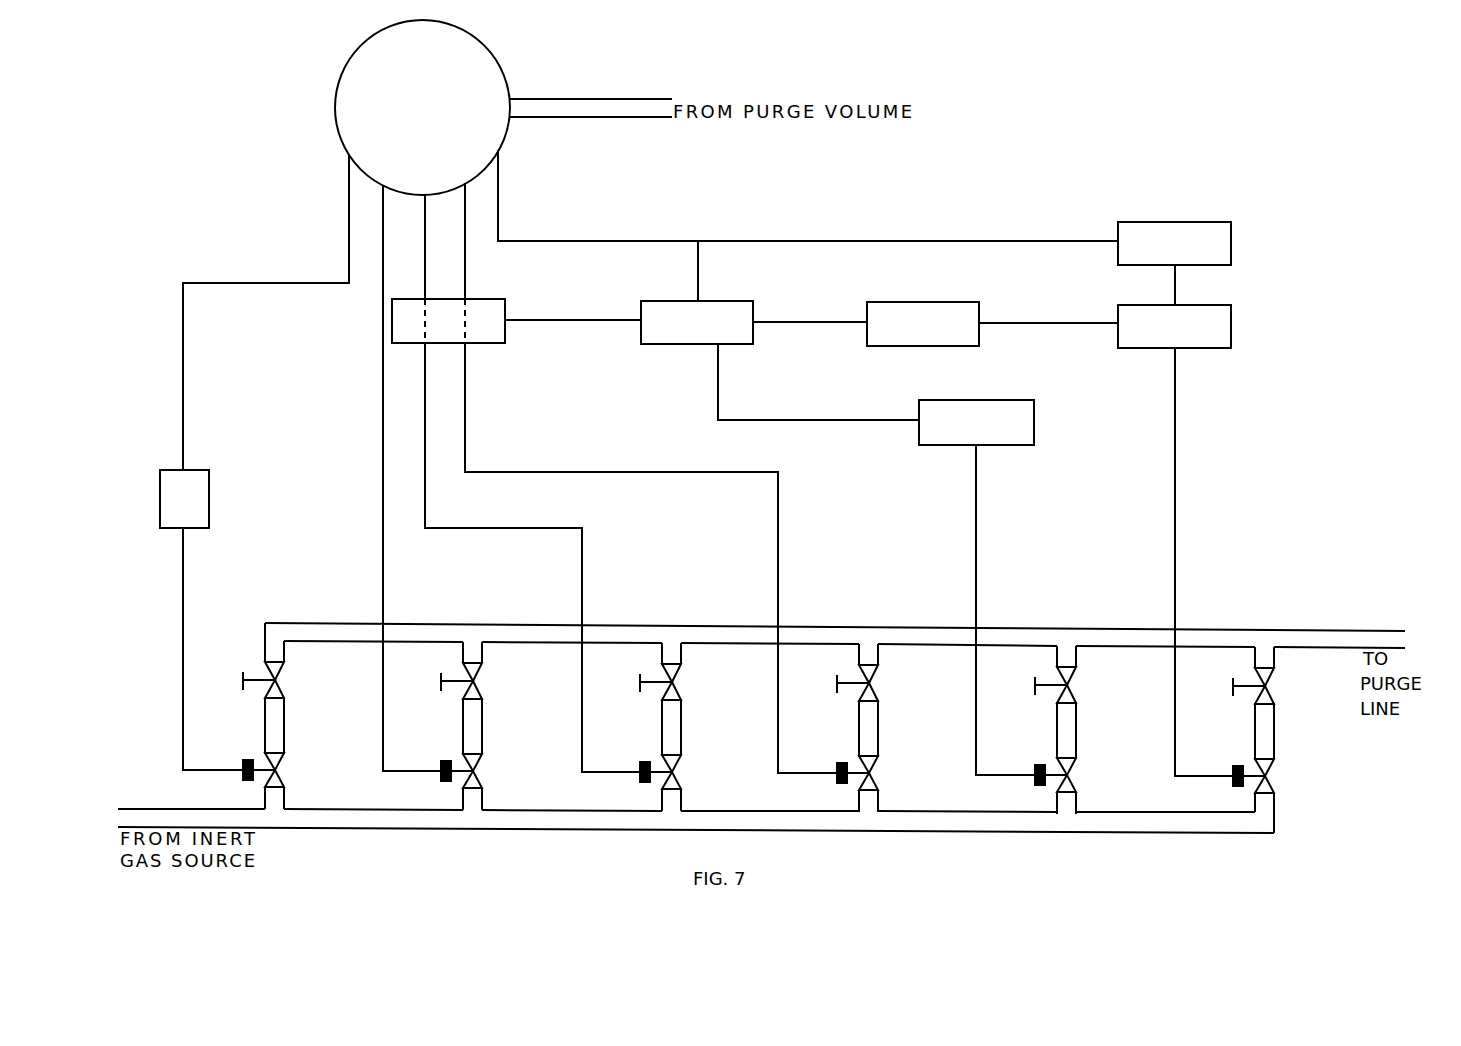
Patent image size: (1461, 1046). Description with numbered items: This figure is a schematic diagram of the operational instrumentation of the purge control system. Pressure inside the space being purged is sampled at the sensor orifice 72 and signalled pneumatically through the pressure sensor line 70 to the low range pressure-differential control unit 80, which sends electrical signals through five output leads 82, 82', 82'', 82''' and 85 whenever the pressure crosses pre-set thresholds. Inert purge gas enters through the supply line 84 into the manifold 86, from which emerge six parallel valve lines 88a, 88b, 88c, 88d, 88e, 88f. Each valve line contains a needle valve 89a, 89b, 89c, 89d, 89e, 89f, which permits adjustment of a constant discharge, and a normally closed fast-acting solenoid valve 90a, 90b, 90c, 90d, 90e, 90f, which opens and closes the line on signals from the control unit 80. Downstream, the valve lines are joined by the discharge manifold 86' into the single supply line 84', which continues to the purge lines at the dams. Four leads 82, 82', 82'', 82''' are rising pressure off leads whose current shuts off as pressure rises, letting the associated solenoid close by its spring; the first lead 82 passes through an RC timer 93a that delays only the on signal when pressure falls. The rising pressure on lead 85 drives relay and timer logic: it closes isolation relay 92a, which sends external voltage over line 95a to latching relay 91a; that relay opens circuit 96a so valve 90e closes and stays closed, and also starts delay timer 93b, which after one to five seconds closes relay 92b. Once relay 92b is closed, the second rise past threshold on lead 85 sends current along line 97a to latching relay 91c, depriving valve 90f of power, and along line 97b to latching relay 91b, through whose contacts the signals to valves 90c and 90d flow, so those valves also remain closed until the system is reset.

The sensor orifice 72 is at (369, 107).
The control unit 80 is at (373, 88).
The pressure sensor line 70 is at (576, 99).
The output lead 85 is at (500, 198).
The output lead 82 is at (266, 462).
The output lead 82' is at (374, 478).
The output lead 82'' is at (461, 483).
The output lead 82''' is at (651, 478).
The latching relay 91a is at (1173, 322).
The latching relay 91b is at (448, 317).
The latching relay 91c is at (832, 420).
The isolation relay 92a is at (1173, 242).
The relay 92b is at (697, 318).
The RC timer 93a is at (187, 500).
The delay timer 93b is at (922, 318).
The line 95a is at (1175, 287).
The circuit 96a is at (1175, 447).
The line 97a is at (718, 392).
The line 97b is at (558, 320).
The supply line 84 is at (191, 798).
The supply line 84' is at (844, 625).
The manifold 86 is at (696, 834).
The discharge manifold 86' is at (835, 612).
The valve line 88a is at (273, 729).
The valve line 88b is at (499, 726).
The valve line 88c is at (697, 727).
The valve line 88d is at (895, 728).
The valve line 88e is at (1291, 731).
The valve line 88f is at (1091, 730).
The needle valve 89a is at (277, 679).
The needle valve 89b is at (488, 680).
The needle valve 89c is at (686, 681).
The needle valve 89d is at (884, 682).
The needle valve 89e is at (1280, 685).
The needle valve 89f is at (1080, 684).
The solenoid valve 90a is at (279, 770).
The solenoid valve 90b is at (488, 771).
The solenoid valve 90c is at (686, 772).
The solenoid valve 90d is at (884, 773).
The solenoid valve 90e is at (1280, 776).
The solenoid valve 90f is at (1080, 775).